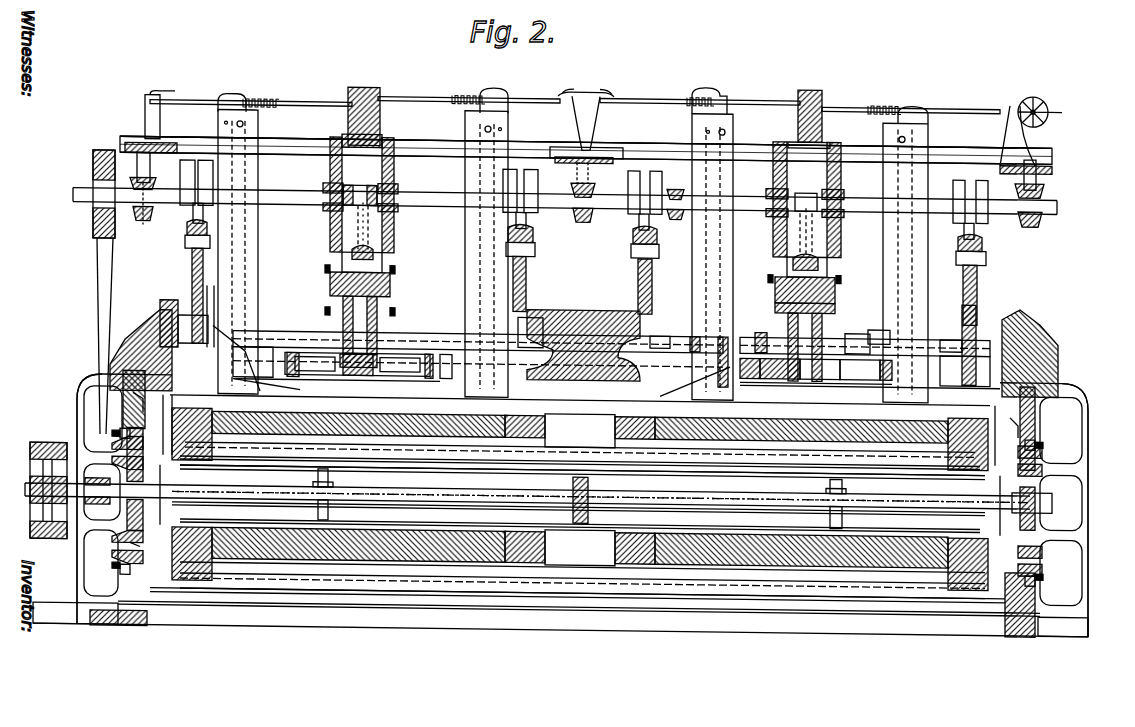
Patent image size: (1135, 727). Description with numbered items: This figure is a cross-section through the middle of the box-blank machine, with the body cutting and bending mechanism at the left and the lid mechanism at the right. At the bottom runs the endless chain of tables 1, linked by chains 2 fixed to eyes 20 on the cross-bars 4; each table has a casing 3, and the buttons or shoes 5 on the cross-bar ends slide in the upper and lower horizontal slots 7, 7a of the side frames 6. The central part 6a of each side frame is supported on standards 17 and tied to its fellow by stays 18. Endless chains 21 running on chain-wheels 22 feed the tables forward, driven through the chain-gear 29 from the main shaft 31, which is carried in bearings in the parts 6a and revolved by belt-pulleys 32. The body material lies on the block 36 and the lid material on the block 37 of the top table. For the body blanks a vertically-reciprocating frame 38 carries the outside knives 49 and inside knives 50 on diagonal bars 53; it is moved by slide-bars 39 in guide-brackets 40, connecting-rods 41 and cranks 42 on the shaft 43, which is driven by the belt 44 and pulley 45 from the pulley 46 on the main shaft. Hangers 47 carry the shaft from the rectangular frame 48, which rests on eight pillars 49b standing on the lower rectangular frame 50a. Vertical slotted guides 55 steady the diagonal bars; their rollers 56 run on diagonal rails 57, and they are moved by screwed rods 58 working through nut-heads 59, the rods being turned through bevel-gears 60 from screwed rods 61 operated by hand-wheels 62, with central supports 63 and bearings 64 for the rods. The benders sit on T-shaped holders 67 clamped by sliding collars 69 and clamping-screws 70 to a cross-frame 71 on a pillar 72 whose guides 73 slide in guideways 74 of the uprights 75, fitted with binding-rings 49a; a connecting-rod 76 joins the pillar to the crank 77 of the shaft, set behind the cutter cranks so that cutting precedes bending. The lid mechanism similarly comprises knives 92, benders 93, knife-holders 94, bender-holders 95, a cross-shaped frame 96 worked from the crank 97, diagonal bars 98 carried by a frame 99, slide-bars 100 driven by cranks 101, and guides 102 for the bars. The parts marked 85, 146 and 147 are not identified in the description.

The table 1 is at (530, 420).
The chain 2 is at (112, 439).
The casing 3 is at (580, 490).
The cross-bar 4 is at (410, 472).
The button or shoe 5 is at (140, 442).
The side frame 6 is at (1005, 615).
The central part of side frame 6a is at (143, 520).
The upper horizontal slot 7 is at (570, 412).
The lower horizontal slot 7a is at (129, 539).
The standard 17 is at (84, 566).
The stay 18 is at (250, 503).
The eye 20 is at (1104, 436).
The endless chain 21 is at (846, 523).
The chain-wheel 22 is at (316, 483).
The chain-gear 29 is at (588, 520).
The main shaft 31 is at (722, 496).
The belt-pulley 32 is at (48, 476).
The block 36 is at (395, 416).
The block 37 is at (820, 425).
The vertically-reciprocating frame 38 is at (180, 350).
The slide-bar 39 is at (192, 280).
The guide-bracket 40 is at (130, 340).
The connecting-rod 41 is at (203, 222).
The crank 42 is at (213, 185).
The shaft 43 is at (280, 200).
The belt 44 is at (108, 282).
The pulley 45 is at (93, 216).
The pulley 46 is at (145, 488).
The hanger 47 is at (140, 183).
The rectangular frame 48 is at (425, 145).
The outside knife 49 is at (232, 352).
The binding-ring 49a is at (854, 273).
The pillar 49b is at (1034, 246).
The inside knife 50 is at (292, 380).
The rectangular frame 50a is at (584, 378).
The diagonal bar 53 is at (222, 316).
The vertical slotted guide 55 is at (258, 252).
The roller 56 is at (243, 128).
The diagonal rail 57 is at (314, 150).
The screwed rod 58 is at (430, 86).
The nut-head 59 is at (240, 98).
The bevel-gear 60 is at (570, 94).
The screwed rod 61 is at (850, 102).
The hand-wheel 62 is at (1046, 111).
The central support 63 is at (372, 92).
The bearing 64 is at (160, 100).
The holder 67 is at (252, 355).
The sliding collar 69 is at (750, 302).
The clamping-screw 70 is at (545, 310).
The cross-frame 71 is at (368, 378).
The pillar 72 is at (343, 314).
The guide 73 is at (330, 290).
The guideway 74 is at (386, 255).
The upright 75 is at (330, 222).
The connecting-rod 76 is at (360, 228).
The crank 77 is at (372, 195).
The link 85 is at (430, 380).
The knife 92 is at (790, 376).
The bender 93 is at (862, 376).
The knife-holder 94 is at (890, 350).
The bender-holder 95 is at (685, 390).
The cross-shaped frame 96 is at (770, 398).
The crank 97 is at (806, 200).
The diagonal bar 98 is at (862, 322).
The frame 99 is at (665, 335).
The slide-bar 100 is at (652, 275).
The crank 101 is at (650, 172).
The guide 102 is at (813, 262).
The bevel gear 146 is at (681, 188).
The bevel gear 147 is at (676, 218).